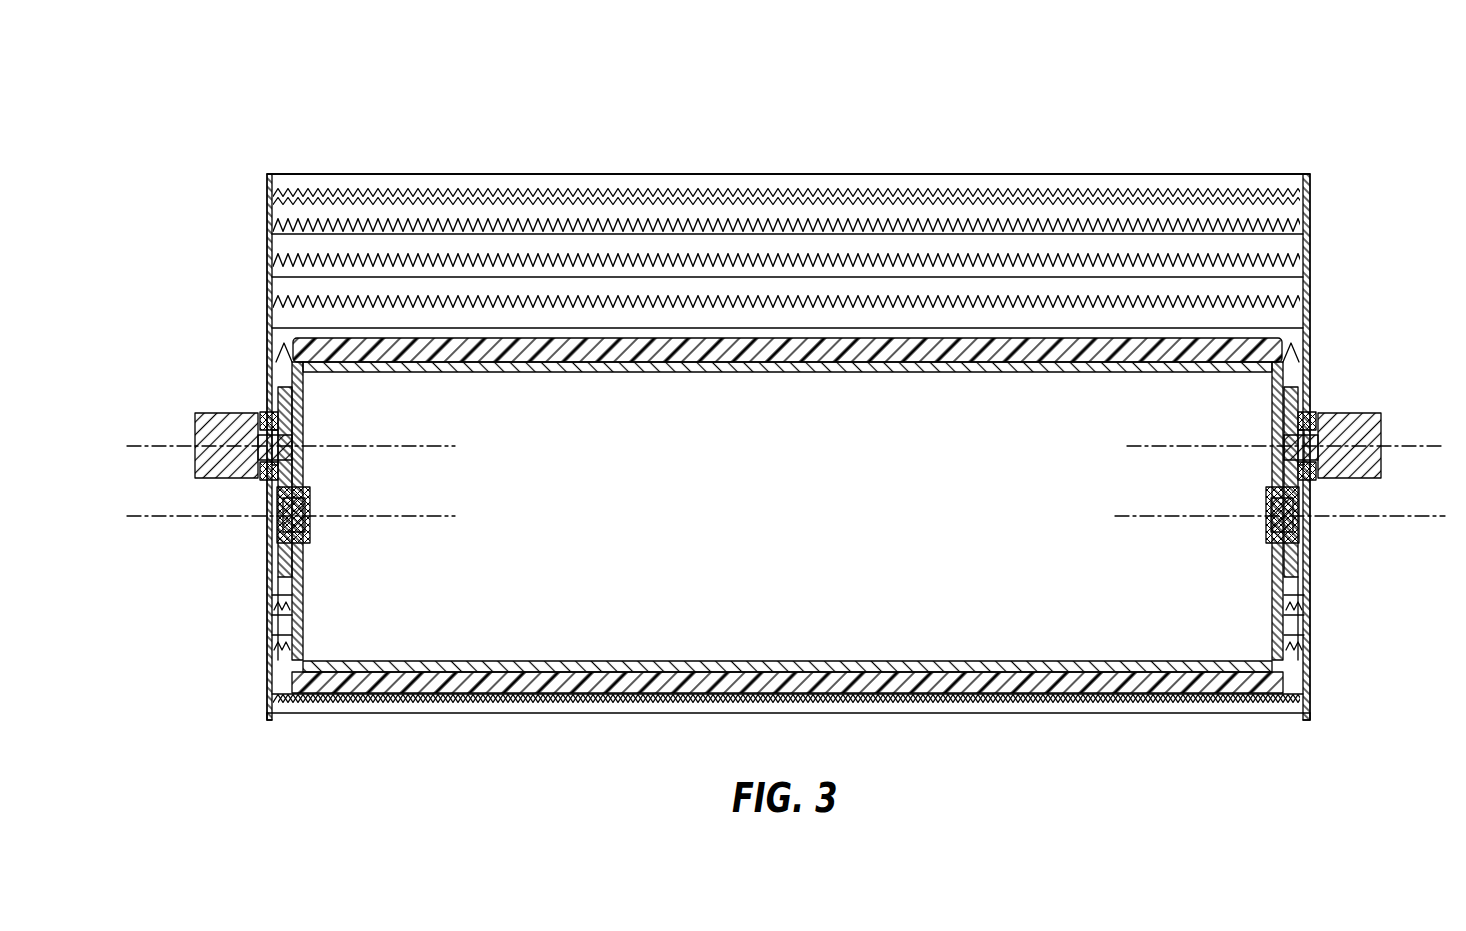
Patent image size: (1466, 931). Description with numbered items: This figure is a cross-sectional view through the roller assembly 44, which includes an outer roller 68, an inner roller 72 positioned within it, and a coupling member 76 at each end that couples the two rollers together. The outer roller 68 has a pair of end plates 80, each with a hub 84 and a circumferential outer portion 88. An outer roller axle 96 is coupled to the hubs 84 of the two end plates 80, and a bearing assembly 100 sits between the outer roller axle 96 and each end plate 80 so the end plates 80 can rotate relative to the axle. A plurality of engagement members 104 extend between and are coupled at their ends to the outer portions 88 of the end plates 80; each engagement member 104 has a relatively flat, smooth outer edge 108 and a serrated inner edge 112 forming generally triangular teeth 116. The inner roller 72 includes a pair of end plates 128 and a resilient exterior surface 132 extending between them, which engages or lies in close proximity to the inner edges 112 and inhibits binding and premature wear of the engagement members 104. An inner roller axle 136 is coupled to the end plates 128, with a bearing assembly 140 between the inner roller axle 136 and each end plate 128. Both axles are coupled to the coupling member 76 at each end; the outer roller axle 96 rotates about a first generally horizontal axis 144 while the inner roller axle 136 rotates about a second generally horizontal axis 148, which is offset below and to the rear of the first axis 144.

The roller assembly 44 is at (1054, 121).
The outer roller 68 is at (519, 168).
The inner roller 72 is at (288, 640).
The coupling member 76 is at (270, 503).
The end plate 80 is at (261, 244).
The hub 84 is at (270, 378).
The outer portion 88 is at (1312, 189).
The outer roller axle 96 is at (222, 418).
The bearing assembly 100 is at (256, 481).
The engagement member 104 is at (826, 178).
The outer edge 108 is at (328, 172).
The inner edge 112 is at (1246, 250).
The teeth 116 is at (638, 255).
The end plate 128 is at (270, 593).
The exterior surface 132 is at (971, 690).
The inner roller axle 136 is at (266, 560).
The bearing assembly 140 is at (314, 559).
The first axis 144 is at (195, 432).
The second axis 148 is at (183, 520).